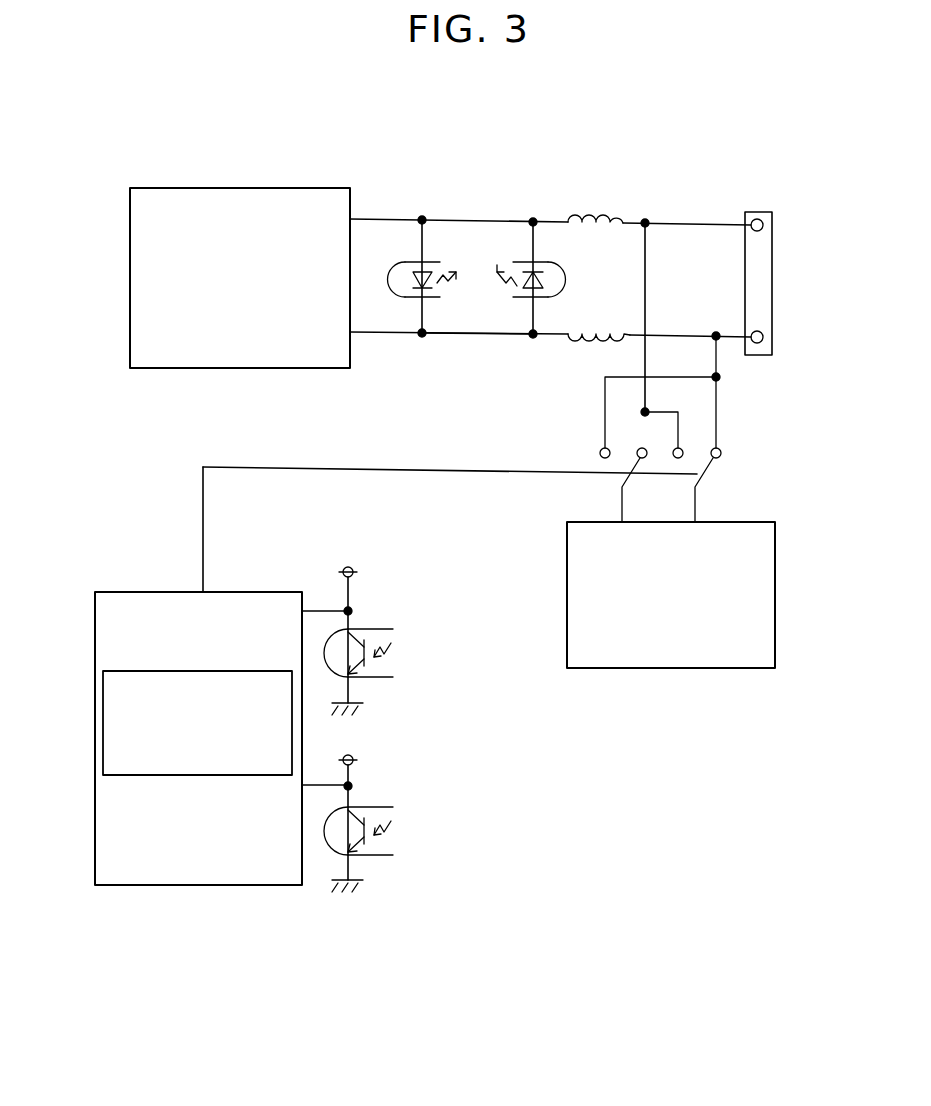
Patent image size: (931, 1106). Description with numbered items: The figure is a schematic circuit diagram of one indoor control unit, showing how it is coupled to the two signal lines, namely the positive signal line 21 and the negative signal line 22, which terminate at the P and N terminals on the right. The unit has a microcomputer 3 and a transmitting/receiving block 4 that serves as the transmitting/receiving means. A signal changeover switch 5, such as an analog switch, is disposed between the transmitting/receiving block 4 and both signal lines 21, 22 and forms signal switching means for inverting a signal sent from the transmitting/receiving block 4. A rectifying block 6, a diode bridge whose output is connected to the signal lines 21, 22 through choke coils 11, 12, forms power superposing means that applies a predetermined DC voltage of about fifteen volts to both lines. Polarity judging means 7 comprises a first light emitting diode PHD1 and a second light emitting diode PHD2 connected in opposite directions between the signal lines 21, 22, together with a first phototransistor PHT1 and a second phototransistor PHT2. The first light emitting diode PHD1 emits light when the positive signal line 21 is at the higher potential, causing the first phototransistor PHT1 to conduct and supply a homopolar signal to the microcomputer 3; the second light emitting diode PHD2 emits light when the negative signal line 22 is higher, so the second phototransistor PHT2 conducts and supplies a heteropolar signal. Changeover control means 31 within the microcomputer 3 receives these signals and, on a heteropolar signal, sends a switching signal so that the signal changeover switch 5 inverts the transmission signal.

The microcomputer 3 is at (228, 885).
The transmitting/receiving block 4 is at (647, 668).
The signal changeover switch 5 is at (720, 458).
The rectifying block 6 is at (257, 186).
The polarity judging means 7 is at (504, 170).
The choke coil 11 is at (577, 209).
The choke coil 12 is at (582, 340).
The positive signal line 21 is at (700, 221).
The negative signal line 22 is at (462, 335).
The changeover control means 31 is at (96, 753).
The first light emitting diode PHD1 is at (403, 280).
The second light emitting diode PHD2 is at (551, 281).
The first phototransistor PHT1 is at (387, 629).
The second phototransistor PHT2 is at (365, 807).